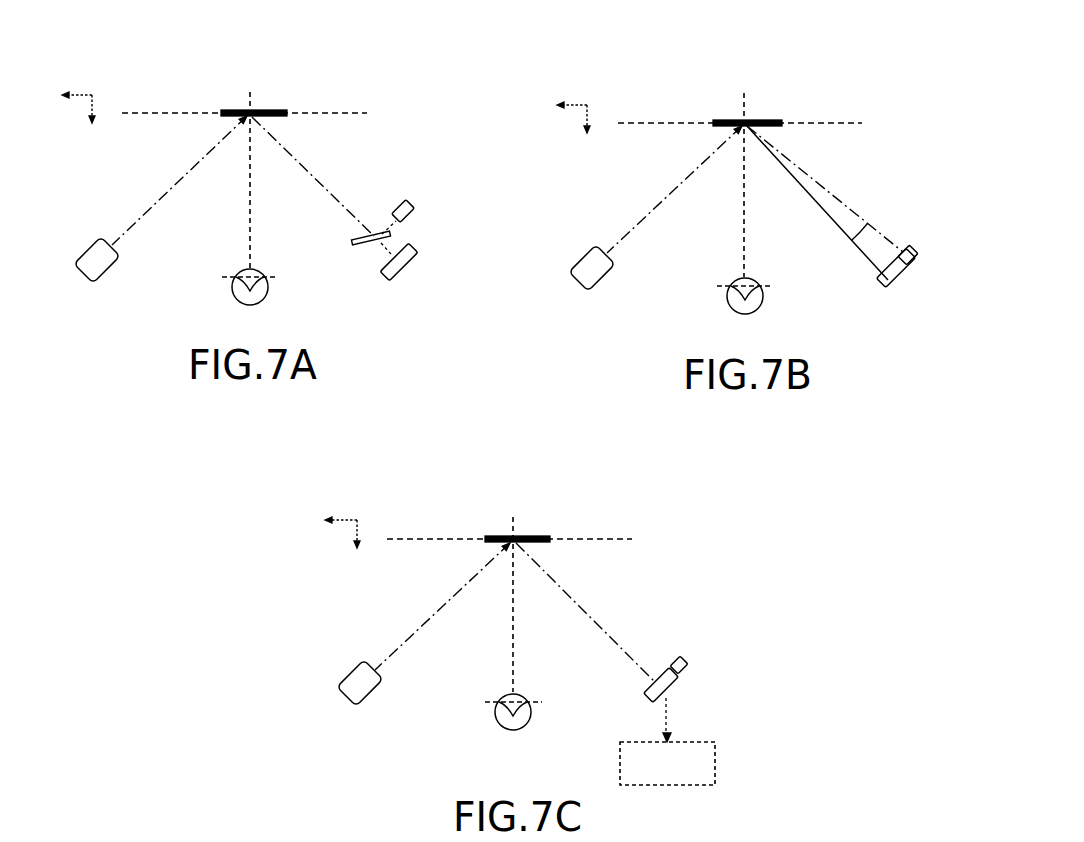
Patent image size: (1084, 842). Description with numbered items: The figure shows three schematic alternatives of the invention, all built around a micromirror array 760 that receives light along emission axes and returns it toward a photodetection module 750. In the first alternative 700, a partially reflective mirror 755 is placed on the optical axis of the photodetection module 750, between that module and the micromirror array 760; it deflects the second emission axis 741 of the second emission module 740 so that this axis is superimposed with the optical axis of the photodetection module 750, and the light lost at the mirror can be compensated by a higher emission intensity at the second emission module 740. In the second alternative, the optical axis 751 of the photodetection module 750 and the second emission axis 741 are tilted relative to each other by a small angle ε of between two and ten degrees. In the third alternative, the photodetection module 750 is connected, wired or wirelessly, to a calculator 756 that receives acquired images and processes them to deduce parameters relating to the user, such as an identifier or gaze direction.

In FIG. 7A, the alternative 700 is at (171, 73).
In FIG. 7B, the alternative 700 is at (675, 73).
In FIG. 7C, the alternative 700 is at (431, 504).
In FIG. 7A, the micromirror array 760 is at (265, 108).
In FIG. 7B, the micromirror array 760 is at (763, 118).
In FIG. 7C, the micromirror array 760 is at (530, 534).
In FIG. 7A, the second emission axis 741 is at (312, 170).
In FIG. 7B, the second emission axis 741 is at (820, 183).
In FIG. 7A, the second emission module 740 is at (407, 198).
In FIG. 7B, the second emission module 740 is at (937, 236).
In FIG. 7A, the photodetection module 750 is at (414, 250).
In FIG. 7B, the photodetection module 750 is at (889, 287).
In FIG. 7C, the photodetection module 750 is at (645, 700).
In FIG. 7A, the partially reflective mirror 755 is at (352, 242).
In FIG. 7B, the optical axis 751 is at (835, 222).
In FIG. 7C, the calculator 756 is at (696, 748).